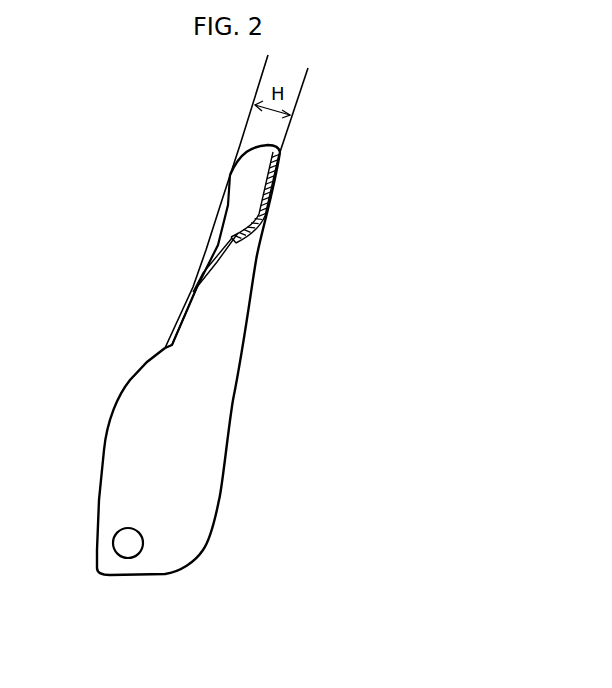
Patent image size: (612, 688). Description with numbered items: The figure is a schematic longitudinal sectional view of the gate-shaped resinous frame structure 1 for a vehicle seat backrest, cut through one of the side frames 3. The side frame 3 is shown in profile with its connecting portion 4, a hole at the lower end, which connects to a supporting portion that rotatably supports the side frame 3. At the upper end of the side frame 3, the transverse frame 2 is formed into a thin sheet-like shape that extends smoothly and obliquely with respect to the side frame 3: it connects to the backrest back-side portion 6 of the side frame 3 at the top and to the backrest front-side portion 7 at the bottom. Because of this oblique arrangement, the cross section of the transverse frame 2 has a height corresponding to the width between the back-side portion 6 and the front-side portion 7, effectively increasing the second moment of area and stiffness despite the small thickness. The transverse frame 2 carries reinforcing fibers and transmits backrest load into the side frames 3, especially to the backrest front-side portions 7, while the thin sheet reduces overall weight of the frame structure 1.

The frame structure 1 is at (337, 200).
The transverse frame 2 is at (218, 260).
The side frame 3 is at (207, 418).
The connecting portion 4 is at (130, 545).
The backrest back-side portion 6 is at (278, 167).
The backrest front-side portion 7 is at (175, 325).